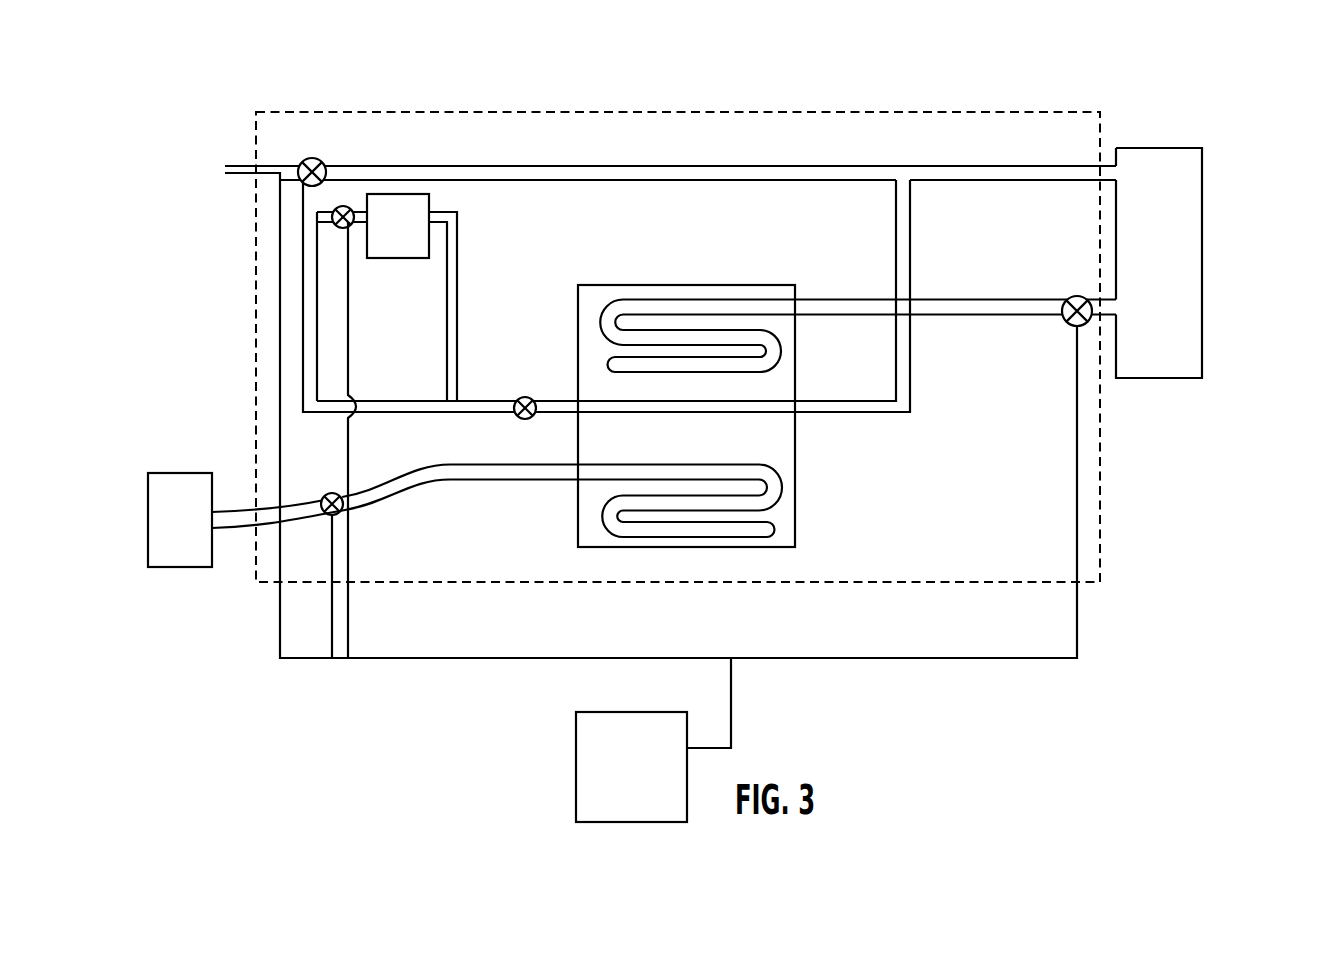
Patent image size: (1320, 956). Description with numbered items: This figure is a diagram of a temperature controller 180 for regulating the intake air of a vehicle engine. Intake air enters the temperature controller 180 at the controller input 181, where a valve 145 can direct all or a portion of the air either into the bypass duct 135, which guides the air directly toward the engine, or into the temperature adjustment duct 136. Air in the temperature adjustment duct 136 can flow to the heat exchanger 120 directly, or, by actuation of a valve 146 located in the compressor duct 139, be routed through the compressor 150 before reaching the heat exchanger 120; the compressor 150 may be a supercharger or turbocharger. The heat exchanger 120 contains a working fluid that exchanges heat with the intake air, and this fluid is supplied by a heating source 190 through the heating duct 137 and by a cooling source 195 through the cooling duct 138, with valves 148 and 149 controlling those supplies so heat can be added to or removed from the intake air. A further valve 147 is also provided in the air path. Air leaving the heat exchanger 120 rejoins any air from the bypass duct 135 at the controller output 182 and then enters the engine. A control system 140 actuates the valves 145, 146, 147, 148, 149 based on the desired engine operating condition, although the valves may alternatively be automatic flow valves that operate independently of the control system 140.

The heat exchanger 120 is at (593, 297).
The bypass duct 135 is at (683, 165).
The temperature adjustment duct 136 is at (495, 401).
The heating duct 137 is at (955, 300).
The cooling duct 138 is at (428, 464).
The compressor duct 139 is at (358, 238).
The control system 140 is at (587, 787).
The valve 145 is at (312, 158).
The valve 146 is at (344, 206).
The valve 147 is at (527, 419).
The valve 148 is at (1077, 296).
The valve 149 is at (331, 493).
The compressor 150 is at (404, 210).
The temperature controller 180 is at (942, 104).
The controller input 181 is at (255, 156).
The controller output 182 is at (1102, 156).
The heating source 190 is at (1187, 178).
The cooling source 195 is at (162, 567).